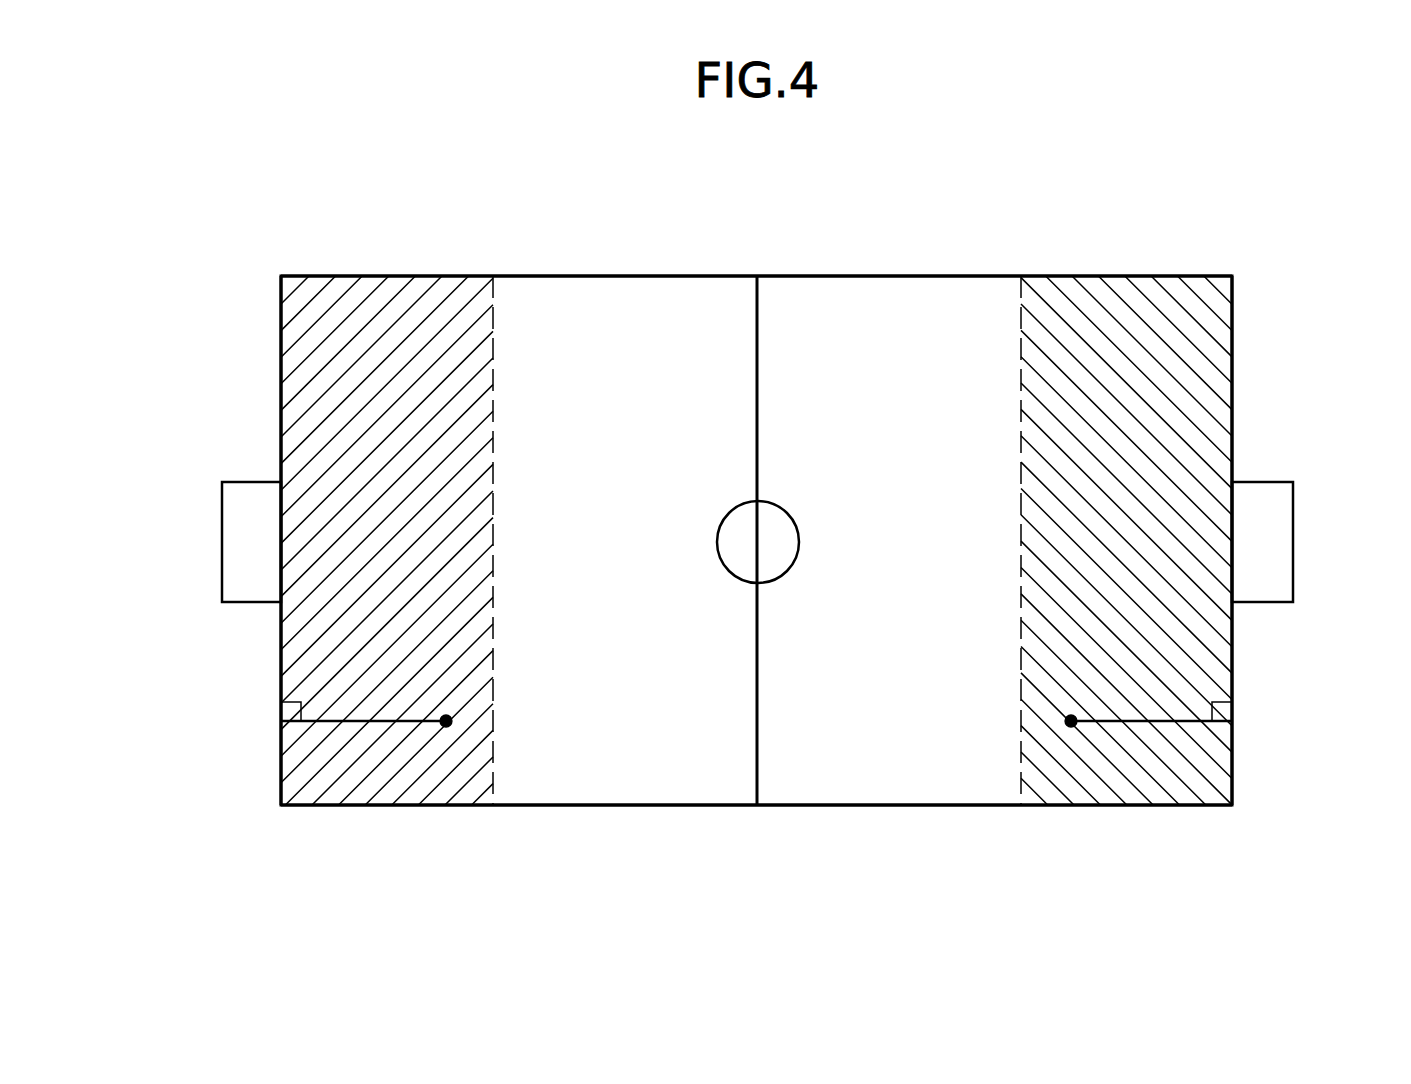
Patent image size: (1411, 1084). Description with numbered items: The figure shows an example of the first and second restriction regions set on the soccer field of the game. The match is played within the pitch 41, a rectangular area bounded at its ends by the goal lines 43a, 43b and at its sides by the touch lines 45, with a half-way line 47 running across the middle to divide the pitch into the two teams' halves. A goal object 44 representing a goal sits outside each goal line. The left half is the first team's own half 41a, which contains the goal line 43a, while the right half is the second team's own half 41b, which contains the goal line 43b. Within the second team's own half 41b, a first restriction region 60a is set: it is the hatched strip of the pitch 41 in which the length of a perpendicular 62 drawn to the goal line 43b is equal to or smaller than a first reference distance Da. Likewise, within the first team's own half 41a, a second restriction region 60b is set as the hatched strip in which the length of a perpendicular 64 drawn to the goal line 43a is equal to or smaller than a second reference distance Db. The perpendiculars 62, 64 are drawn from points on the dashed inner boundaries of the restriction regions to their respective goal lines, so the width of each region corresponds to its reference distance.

The pitch 41 is at (897, 780).
The first team's own half 41a is at (281, 232).
The second team's own half 41b is at (757, 232).
The goal line 43a is at (283, 661).
The goal line 43b is at (1234, 375).
The goal object 44 is at (220, 541).
The touch line 45 is at (645, 278).
The half-way line 47 is at (758, 380).
The first restriction region 60a is at (1210, 318).
The second restriction region 60b is at (308, 316).
The perpendicular 62 is at (1172, 723).
The perpendicular 64 is at (339, 722).